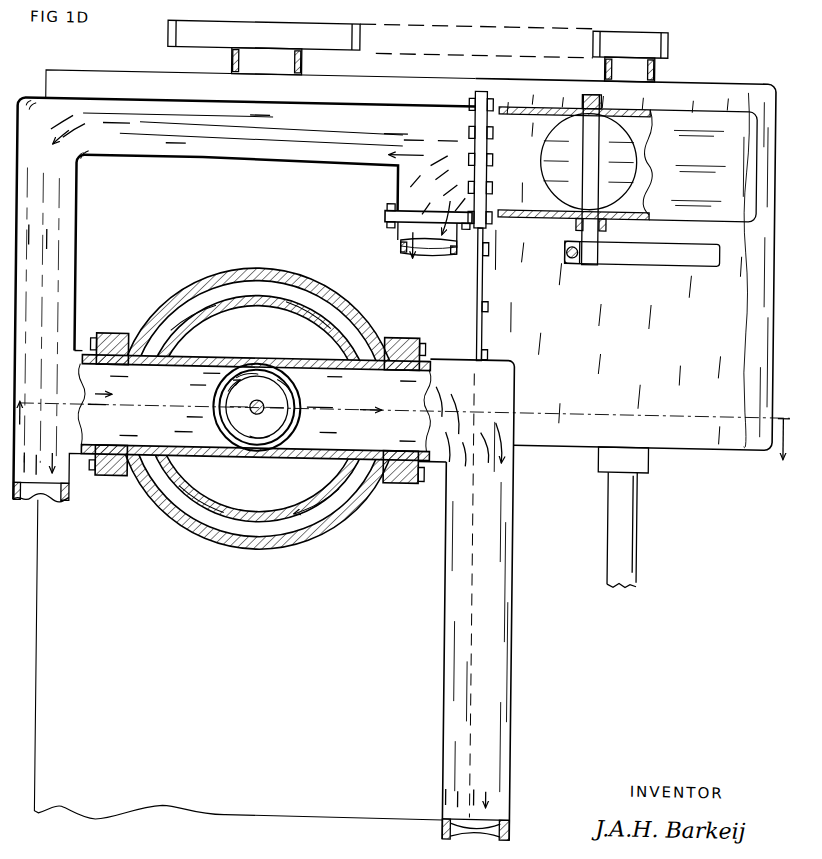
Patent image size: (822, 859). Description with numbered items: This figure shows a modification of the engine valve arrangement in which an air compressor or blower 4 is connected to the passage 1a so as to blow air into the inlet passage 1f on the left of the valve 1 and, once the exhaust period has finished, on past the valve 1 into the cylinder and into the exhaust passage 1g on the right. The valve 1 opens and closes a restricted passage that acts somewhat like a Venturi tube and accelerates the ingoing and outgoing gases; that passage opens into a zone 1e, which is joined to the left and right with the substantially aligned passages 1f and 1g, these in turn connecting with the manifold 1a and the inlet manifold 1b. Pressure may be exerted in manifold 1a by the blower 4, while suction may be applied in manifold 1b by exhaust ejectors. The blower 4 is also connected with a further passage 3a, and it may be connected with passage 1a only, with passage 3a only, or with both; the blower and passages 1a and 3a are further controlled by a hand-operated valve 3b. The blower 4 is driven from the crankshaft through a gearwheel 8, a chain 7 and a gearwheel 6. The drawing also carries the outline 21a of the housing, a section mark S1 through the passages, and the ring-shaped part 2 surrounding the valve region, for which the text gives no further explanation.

The valve 1 is at (252, 409).
The inlet passage 1a is at (341, 168).
The inlet manifold 1b is at (446, 687).
The zone 1e is at (298, 397).
The inlet passage 1f is at (158, 404).
The exhaust passage 1g is at (404, 421).
The annular ring 2 is at (218, 545).
The passage 3a is at (394, 245).
The valve 3b is at (637, 265).
The air compressor or blower 4 is at (732, 76).
The gearwheel 6 is at (665, 29).
The chain 7 is at (508, 24).
The gearwheel 8 is at (336, 25).
The housing boundary 21a is at (65, 79).
The section line S1 is at (403, 441).